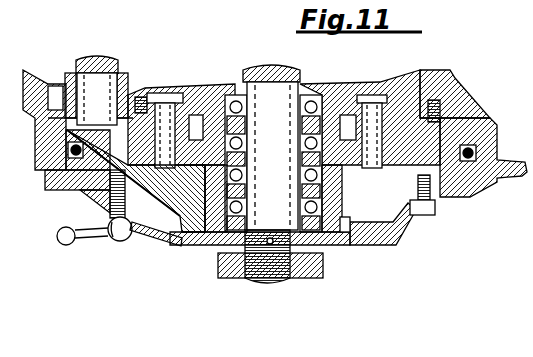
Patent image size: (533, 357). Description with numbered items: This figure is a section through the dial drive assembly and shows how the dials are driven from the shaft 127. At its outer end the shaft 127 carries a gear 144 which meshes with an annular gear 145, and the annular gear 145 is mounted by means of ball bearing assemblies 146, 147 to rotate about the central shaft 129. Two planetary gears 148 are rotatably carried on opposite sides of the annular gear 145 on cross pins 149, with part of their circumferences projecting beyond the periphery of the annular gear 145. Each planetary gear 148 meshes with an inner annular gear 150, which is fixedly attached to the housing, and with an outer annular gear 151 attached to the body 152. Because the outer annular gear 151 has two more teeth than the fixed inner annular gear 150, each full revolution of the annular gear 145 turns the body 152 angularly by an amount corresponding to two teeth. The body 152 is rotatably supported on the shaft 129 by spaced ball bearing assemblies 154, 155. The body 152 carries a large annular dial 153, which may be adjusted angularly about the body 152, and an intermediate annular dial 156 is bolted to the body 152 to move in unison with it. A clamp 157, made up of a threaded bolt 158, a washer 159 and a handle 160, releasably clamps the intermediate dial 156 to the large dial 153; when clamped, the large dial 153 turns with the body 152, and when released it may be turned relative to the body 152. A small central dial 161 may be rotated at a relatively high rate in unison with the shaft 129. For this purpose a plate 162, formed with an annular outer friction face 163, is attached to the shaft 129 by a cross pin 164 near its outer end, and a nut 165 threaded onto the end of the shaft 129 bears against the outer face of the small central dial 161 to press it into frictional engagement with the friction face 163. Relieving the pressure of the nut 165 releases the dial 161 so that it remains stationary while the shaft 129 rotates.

The shaft 127 is at (77, 73).
The shaft 129 is at (272, 110).
The gear 144 is at (120, 76).
The annular gear 145 is at (160, 93).
The ball bearing assembly 146 is at (310, 100).
The ball bearing assembly 147 is at (308, 95).
The planetary gear 148 is at (203, 117).
The cross pin 149 is at (198, 118).
The inner annular gear 150 is at (130, 82).
The outer annular gear 151 is at (108, 139).
The body 152 is at (143, 172).
The large annular dial 153 is at (48, 186).
The ball bearing assembly 154 is at (228, 167).
The ball bearing assembly 155 is at (231, 216).
The intermediate annular dial 156 is at (84, 196).
The clamp 157 is at (121, 250).
The threaded bolt 158 is at (128, 237).
The washer 159 is at (106, 218).
The handle 160 is at (84, 241).
The small central dial 161 is at (392, 238).
The plate 162 is at (342, 258).
The annular outer friction face 163 is at (345, 248).
The cross pin 164 is at (270, 246).
The nut 165 is at (338, 250).